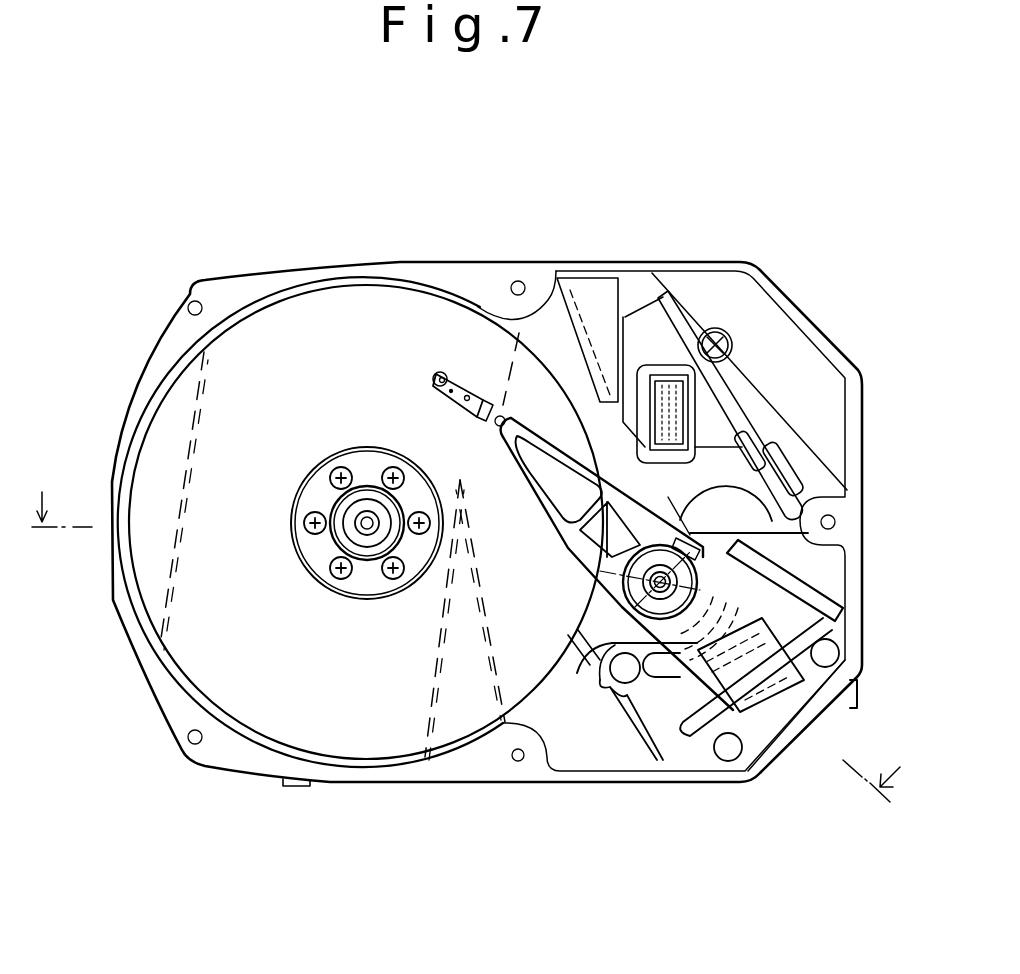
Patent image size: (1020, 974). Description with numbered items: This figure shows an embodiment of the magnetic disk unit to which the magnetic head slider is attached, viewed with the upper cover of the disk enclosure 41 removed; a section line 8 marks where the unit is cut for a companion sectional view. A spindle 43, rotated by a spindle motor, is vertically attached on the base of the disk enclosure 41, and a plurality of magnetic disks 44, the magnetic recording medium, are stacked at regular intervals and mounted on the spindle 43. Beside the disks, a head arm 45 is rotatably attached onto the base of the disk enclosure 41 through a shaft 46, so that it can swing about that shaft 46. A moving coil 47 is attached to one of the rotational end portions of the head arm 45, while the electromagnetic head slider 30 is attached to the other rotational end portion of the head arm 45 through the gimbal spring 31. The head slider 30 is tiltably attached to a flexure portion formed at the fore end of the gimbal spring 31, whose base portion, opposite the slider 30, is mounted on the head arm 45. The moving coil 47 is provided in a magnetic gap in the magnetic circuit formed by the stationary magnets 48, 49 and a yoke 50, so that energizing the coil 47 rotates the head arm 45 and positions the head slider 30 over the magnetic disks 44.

The section line 8- 8 is at (476, 629).
The electromagnetic head slider 30 is at (447, 367).
The gimbal spring 31 is at (460, 388).
The disk enclosure 41 is at (227, 293).
The spindle 43 is at (371, 556).
The magnetic disk 44 is at (408, 300).
The head arm 45 is at (832, 542).
The shaft 46 is at (618, 618).
The moving coil 47 is at (838, 623).
The stationary magnet 48 is at (664, 662).
The stationary magnet 49 is at (728, 718).
The yoke 50 is at (682, 702).